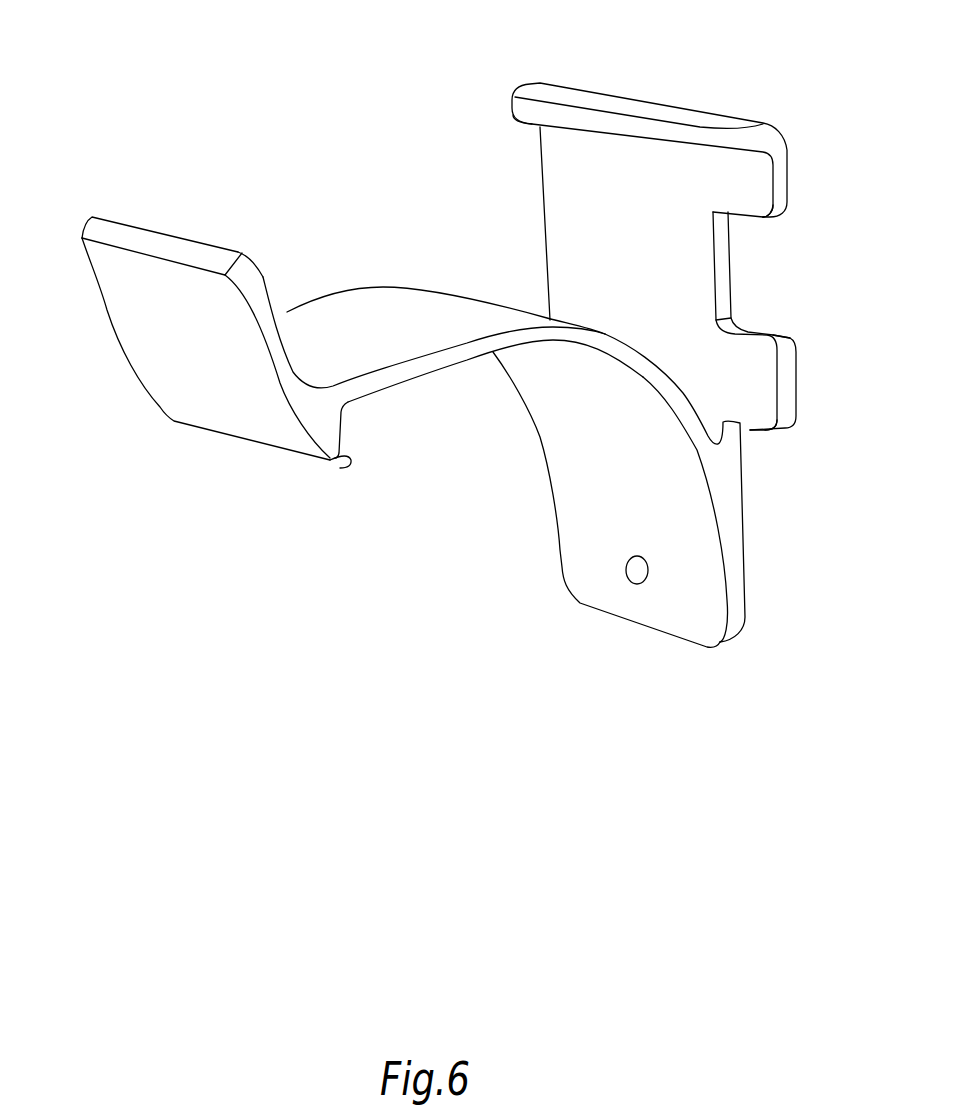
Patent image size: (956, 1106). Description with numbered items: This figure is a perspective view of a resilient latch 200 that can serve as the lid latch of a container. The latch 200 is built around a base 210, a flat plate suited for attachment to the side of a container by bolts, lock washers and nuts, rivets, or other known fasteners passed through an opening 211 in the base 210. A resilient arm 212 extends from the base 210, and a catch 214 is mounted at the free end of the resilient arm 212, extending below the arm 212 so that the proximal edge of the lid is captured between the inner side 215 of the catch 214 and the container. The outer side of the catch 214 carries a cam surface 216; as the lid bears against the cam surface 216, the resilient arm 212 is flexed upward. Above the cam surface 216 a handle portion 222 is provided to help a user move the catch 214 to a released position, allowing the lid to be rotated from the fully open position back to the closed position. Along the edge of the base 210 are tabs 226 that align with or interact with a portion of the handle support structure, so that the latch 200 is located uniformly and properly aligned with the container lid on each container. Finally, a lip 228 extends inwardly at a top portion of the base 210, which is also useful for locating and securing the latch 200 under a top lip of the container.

The resilient latch 200 is at (258, 163).
The base 210 is at (600, 220).
The opening 211 is at (633, 570).
The resilient arm 212 is at (347, 305).
The catch 214 is at (350, 462).
The inner side 215 is at (343, 432).
The cam surface 216 is at (170, 359).
The handle portion 222 is at (130, 267).
The tabs 226 is at (752, 193).
The lip 228 is at (520, 103).